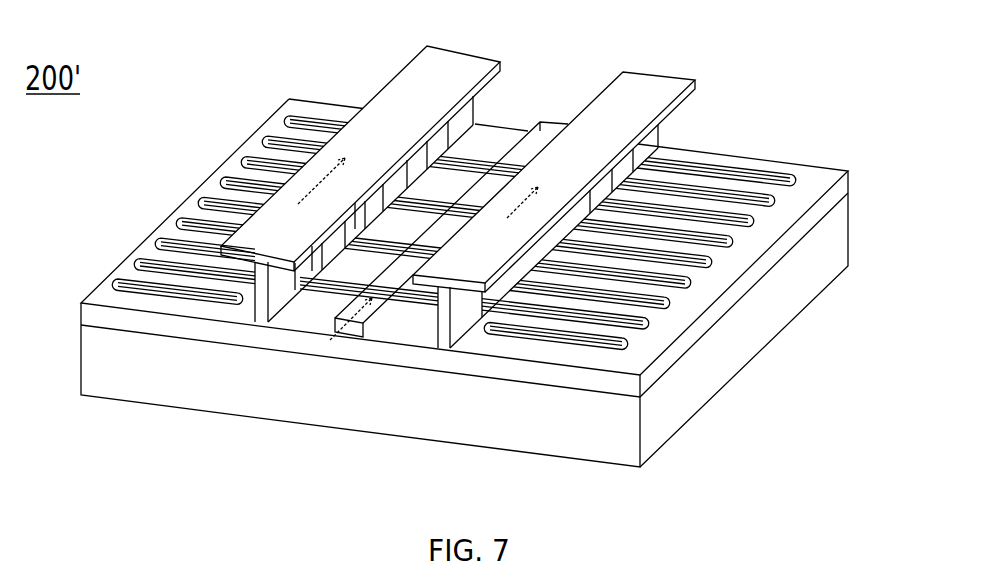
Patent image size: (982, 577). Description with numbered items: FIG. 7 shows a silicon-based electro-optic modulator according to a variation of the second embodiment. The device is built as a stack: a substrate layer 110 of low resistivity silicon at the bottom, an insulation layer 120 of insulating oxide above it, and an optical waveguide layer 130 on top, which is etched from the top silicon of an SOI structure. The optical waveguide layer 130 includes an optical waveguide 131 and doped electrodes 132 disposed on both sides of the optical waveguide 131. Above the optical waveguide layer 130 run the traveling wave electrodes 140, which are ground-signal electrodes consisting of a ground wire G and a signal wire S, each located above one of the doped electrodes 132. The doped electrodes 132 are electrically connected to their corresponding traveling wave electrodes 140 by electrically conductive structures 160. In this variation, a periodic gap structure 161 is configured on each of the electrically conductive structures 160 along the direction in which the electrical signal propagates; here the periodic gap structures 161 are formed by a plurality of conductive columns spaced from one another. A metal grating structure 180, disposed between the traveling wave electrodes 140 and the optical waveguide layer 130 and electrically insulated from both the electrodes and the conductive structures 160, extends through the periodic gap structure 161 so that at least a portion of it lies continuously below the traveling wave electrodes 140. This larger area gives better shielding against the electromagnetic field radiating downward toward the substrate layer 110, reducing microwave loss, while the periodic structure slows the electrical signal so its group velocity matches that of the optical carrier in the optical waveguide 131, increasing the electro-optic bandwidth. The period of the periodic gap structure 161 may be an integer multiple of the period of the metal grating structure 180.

The substrate layer 110 is at (810, 262).
The insulation layer 120 is at (733, 294).
The optical waveguide layer 130 is at (398, 322).
The optical waveguide 131 is at (340, 330).
The doped electrodes 132 is at (285, 300).
The traveling wave electrodes 140 is at (226, 268).
The electrically conductive structures 160 is at (442, 315).
The periodic gap structure 161 is at (497, 302).
The metal grating structure 180 is at (146, 290).